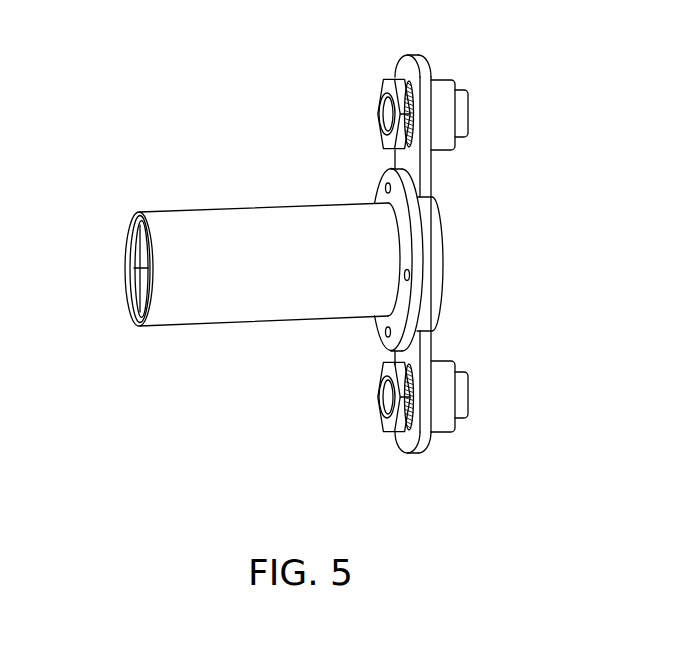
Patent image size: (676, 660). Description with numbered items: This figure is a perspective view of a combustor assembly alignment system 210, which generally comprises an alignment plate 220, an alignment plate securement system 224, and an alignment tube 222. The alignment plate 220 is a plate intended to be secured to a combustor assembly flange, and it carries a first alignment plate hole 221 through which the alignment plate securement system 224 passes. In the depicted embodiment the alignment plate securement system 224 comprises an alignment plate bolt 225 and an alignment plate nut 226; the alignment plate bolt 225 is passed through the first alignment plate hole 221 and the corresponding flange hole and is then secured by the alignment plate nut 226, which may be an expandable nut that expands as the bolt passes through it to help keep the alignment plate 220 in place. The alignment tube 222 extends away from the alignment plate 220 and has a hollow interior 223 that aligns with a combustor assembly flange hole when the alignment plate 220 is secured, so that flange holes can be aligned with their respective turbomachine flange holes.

The combustor assembly alignment system 210 is at (306, 274).
The alignment plate 220 is at (466, 243).
The first alignment plate hole 221 is at (437, 68).
The alignment tube 222 is at (242, 308).
The hollow interior 223 is at (135, 278).
The alignment plate securement system 224 is at (390, 440).
The alignment plate bolt 225 is at (393, 434).
The alignment plate nut 226 is at (438, 432).